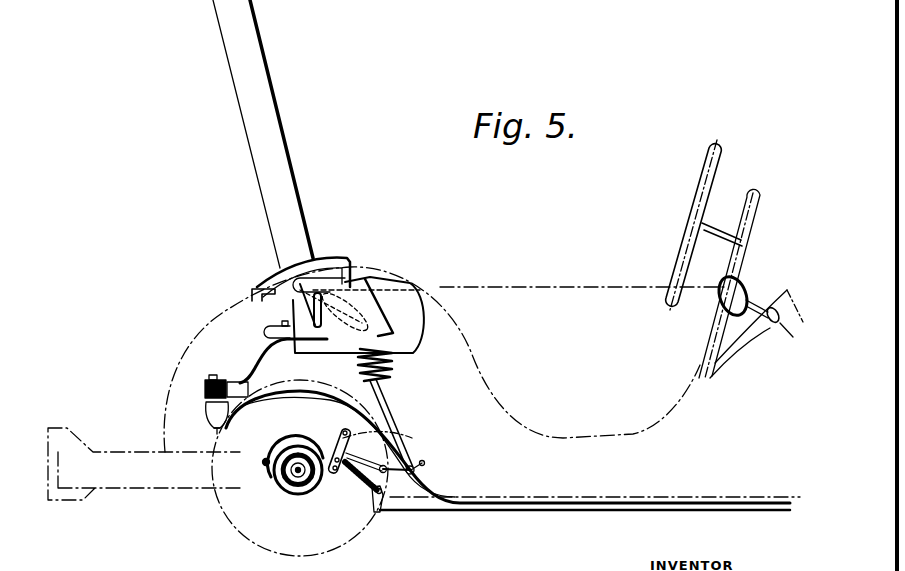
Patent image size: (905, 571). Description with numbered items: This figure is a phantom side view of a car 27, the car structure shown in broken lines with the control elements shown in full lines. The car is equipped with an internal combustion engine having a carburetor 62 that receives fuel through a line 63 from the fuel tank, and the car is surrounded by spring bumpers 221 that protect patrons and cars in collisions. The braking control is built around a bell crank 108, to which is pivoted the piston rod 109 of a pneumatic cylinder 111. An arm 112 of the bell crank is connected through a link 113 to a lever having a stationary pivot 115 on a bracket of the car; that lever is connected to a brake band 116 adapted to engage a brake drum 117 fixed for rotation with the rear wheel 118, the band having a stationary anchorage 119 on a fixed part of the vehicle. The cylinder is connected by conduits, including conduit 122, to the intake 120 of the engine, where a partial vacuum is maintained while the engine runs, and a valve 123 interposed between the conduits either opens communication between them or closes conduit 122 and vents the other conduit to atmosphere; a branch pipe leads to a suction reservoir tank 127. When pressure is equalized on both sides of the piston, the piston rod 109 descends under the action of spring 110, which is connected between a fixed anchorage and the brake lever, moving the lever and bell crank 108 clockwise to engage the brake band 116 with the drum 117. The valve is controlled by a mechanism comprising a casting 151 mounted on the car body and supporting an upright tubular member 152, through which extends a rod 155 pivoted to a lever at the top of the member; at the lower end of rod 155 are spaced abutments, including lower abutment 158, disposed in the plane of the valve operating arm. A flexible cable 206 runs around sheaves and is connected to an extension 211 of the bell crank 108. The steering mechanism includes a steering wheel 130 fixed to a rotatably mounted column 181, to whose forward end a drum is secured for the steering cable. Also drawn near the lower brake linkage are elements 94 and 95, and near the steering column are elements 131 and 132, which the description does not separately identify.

The car 27 is at (479, 286).
The carburetor 62 is at (213, 390).
The fuel line 63 is at (287, 400).
The bracket 94 is at (382, 512).
The footboard 95 is at (517, 510).
The bell crank 108 is at (395, 478).
The piston rod 109 is at (390, 395).
The spring 110 is at (365, 486).
The pneumatic cylinder 111 is at (392, 332).
The arm of the bell crank 112 is at (415, 463).
The link 113 is at (380, 445).
The stationary pivot 115 is at (317, 497).
The brake band 116 is at (298, 443).
The brake drum 117 is at (283, 483).
The rear wheel 118 is at (240, 533).
The stationary anchorage or pivot 119 is at (264, 463).
The intake 120 is at (240, 383).
The conduit 122 is at (260, 360).
The valve 123 is at (348, 310).
The suction reservoir tank 127 is at (407, 297).
The steering wheel 130 is at (680, 228).
The end cup 131 is at (788, 320).
The knob 132 is at (723, 307).
The casting 151 is at (330, 258).
The upright tubular member 152 is at (294, 176).
The rod 155 is at (280, 272).
The lower abutment 158 is at (336, 280).
The column 181 is at (793, 227).
The flexible cable 206 is at (433, 481).
The extension of bell crank 211 is at (425, 464).
The spring bumpers 221 is at (78, 493).